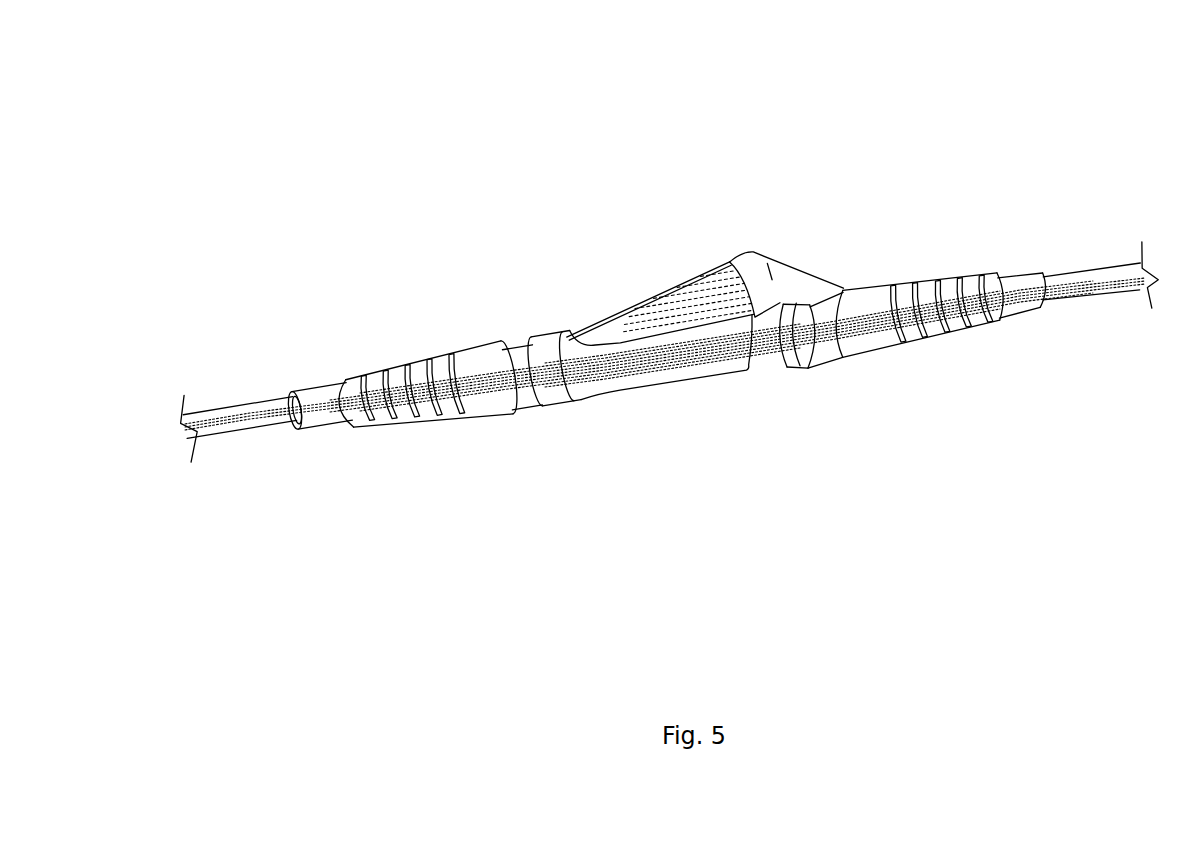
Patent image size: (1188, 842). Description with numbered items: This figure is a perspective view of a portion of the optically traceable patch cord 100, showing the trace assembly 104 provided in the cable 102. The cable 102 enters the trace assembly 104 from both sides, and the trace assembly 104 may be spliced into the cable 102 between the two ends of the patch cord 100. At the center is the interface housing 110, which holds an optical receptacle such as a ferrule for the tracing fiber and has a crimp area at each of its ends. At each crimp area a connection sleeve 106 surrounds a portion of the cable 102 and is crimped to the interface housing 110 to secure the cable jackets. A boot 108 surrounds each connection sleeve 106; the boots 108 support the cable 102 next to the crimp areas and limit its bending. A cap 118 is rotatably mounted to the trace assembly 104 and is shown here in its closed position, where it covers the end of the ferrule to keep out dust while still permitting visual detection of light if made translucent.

The patch cord 100 is at (648, 328).
The cable 102 is at (240, 425).
The trace assembly 104 is at (682, 269).
The connection sleeve 106 is at (320, 393).
The boot 108 is at (478, 358).
The interface housing 110 is at (625, 318).
The cap 118 is at (792, 287).